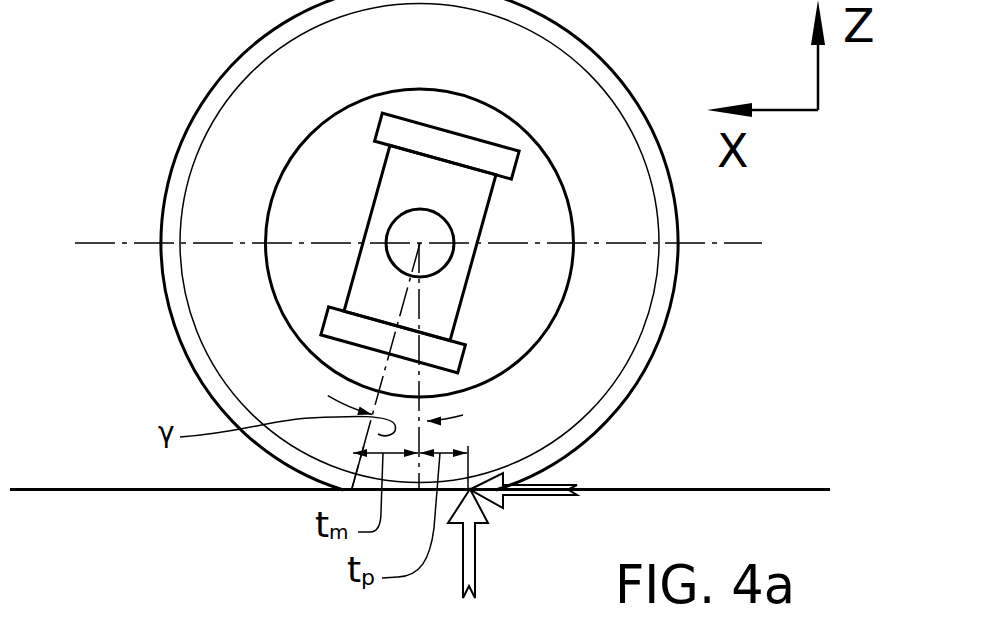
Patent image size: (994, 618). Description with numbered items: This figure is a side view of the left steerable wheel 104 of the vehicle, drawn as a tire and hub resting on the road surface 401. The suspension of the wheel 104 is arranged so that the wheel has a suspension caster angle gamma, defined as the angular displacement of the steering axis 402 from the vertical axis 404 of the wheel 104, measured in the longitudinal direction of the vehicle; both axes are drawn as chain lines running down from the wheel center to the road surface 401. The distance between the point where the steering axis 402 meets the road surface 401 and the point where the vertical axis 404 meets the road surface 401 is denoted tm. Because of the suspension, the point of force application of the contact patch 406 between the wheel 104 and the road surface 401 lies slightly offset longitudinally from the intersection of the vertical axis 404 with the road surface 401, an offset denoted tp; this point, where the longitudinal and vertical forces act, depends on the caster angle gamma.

The left steerable wheel 104 is at (614, 285).
The road surface 401 is at (182, 490).
The steering axis 402 is at (400, 312).
The vertical axis 404 is at (418, 313).
The contact patch 406 is at (471, 490).